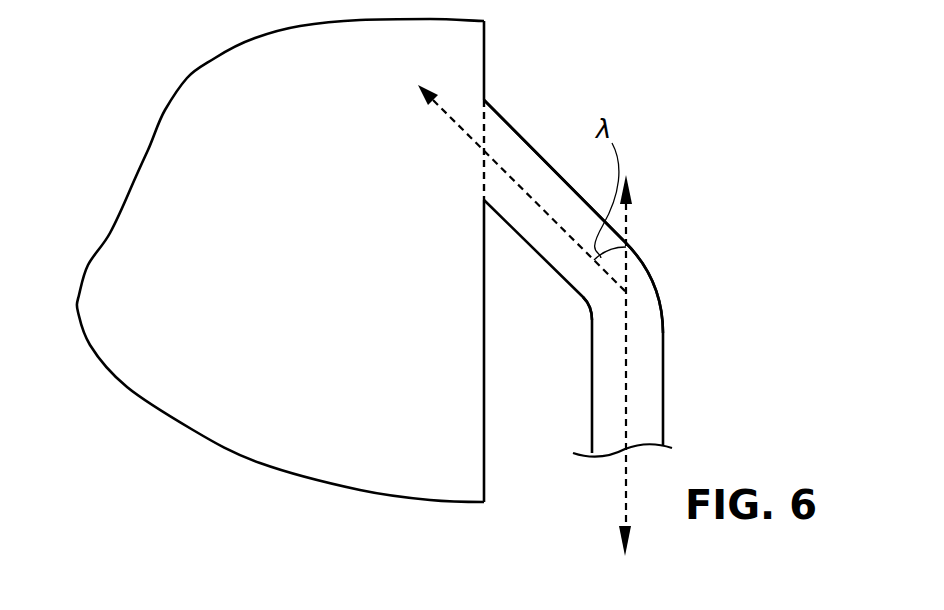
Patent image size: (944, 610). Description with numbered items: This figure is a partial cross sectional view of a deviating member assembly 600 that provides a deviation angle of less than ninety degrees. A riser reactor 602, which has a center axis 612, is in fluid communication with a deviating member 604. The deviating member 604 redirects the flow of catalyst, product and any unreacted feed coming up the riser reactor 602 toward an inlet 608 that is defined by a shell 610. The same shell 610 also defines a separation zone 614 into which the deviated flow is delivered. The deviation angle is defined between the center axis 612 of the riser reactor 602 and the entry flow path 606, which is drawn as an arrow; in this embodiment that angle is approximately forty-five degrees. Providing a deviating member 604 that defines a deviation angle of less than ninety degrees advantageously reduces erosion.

The deviating member assembly 600 is at (708, 120).
The riser reactor 602 is at (664, 383).
The deviating member 604 is at (650, 263).
The entry flow path 606 is at (552, 266).
The inlet 608 is at (485, 133).
The shell 610 is at (485, 45).
The center axis 612 is at (625, 328).
The separation zone 614 is at (305, 277).